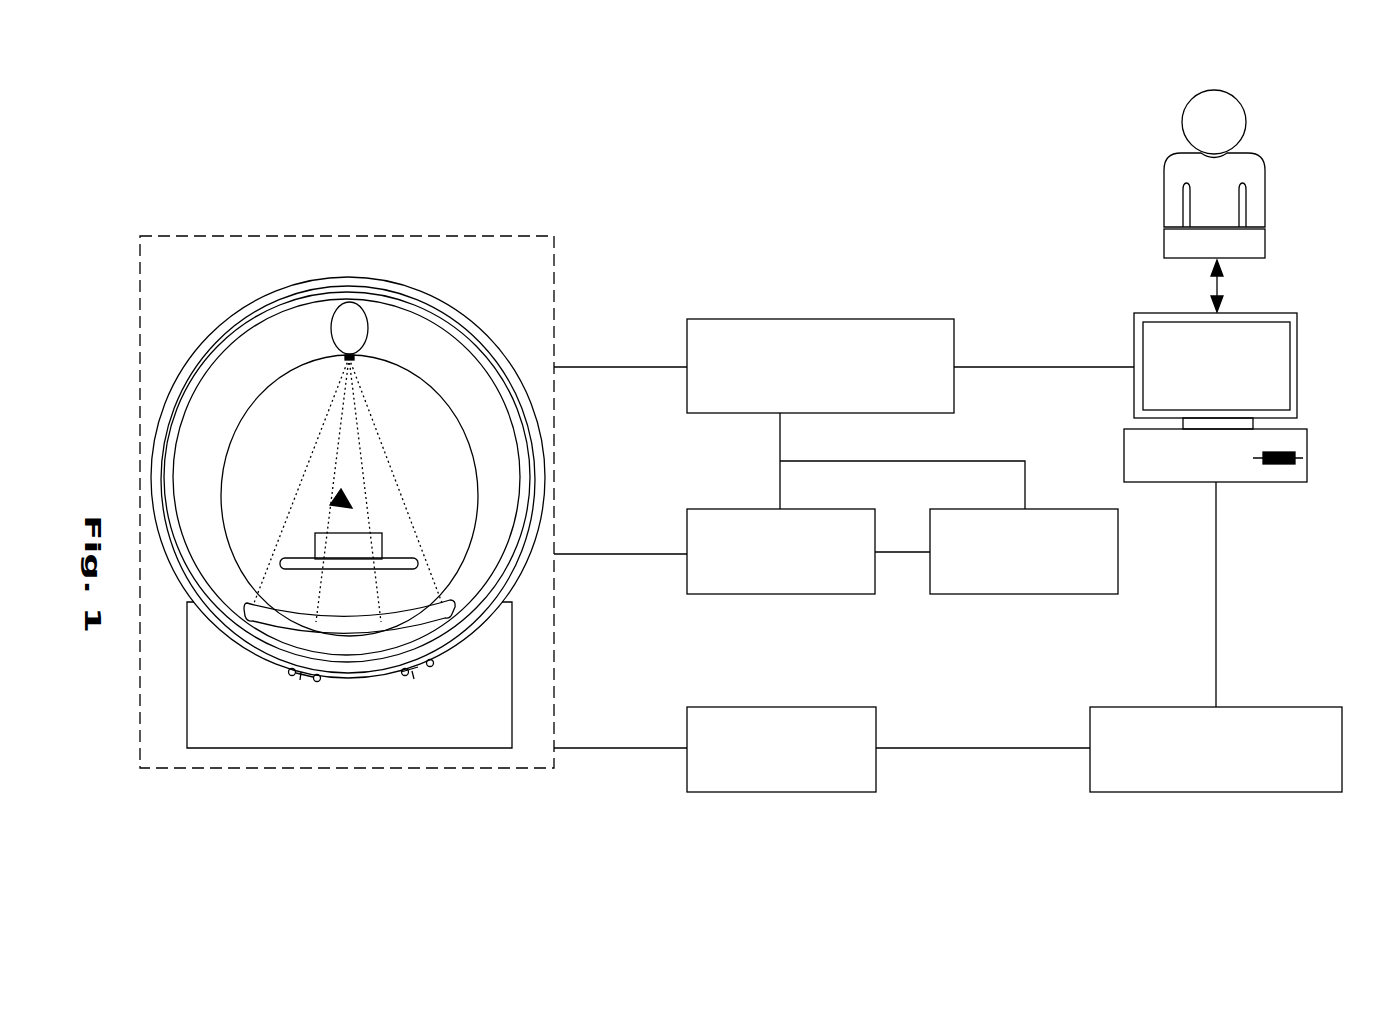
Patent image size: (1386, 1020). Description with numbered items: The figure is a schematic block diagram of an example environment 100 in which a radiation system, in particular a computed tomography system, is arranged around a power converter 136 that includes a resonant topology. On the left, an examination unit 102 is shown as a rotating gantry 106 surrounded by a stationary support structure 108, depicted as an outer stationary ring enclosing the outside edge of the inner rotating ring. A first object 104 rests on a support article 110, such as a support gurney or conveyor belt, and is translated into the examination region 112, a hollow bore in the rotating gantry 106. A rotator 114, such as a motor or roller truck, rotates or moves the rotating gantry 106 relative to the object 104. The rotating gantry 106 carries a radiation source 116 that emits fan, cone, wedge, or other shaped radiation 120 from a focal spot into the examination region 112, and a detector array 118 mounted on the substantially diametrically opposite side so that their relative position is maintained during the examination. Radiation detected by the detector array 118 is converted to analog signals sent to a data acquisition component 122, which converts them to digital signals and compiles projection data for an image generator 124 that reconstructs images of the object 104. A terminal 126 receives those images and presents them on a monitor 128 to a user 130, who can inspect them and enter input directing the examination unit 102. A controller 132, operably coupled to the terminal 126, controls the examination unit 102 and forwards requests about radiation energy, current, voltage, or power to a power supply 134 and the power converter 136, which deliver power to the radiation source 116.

The example environment 100 is at (258, 82).
The examination unit 102 is at (554, 236).
The first object 104 is at (385, 546).
The rotating gantry 106 is at (228, 320).
The support structure 108 is at (474, 304).
The support article 110 is at (288, 557).
The examination region 112 is at (338, 500).
The rotator 114 is at (432, 665).
The radiation source 116 is at (367, 332).
The detector array 118 is at (268, 627).
The radiation 120 is at (316, 447).
The data acquisition component 122 is at (769, 792).
The image generator 124 is at (1217, 792).
The terminal 126 is at (1306, 429).
The monitor 128 is at (1297, 313).
The user 130 is at (1265, 168).
The controller 132 is at (821, 319).
The power supply 134 is at (1025, 594).
The power converter 136 is at (781, 594).